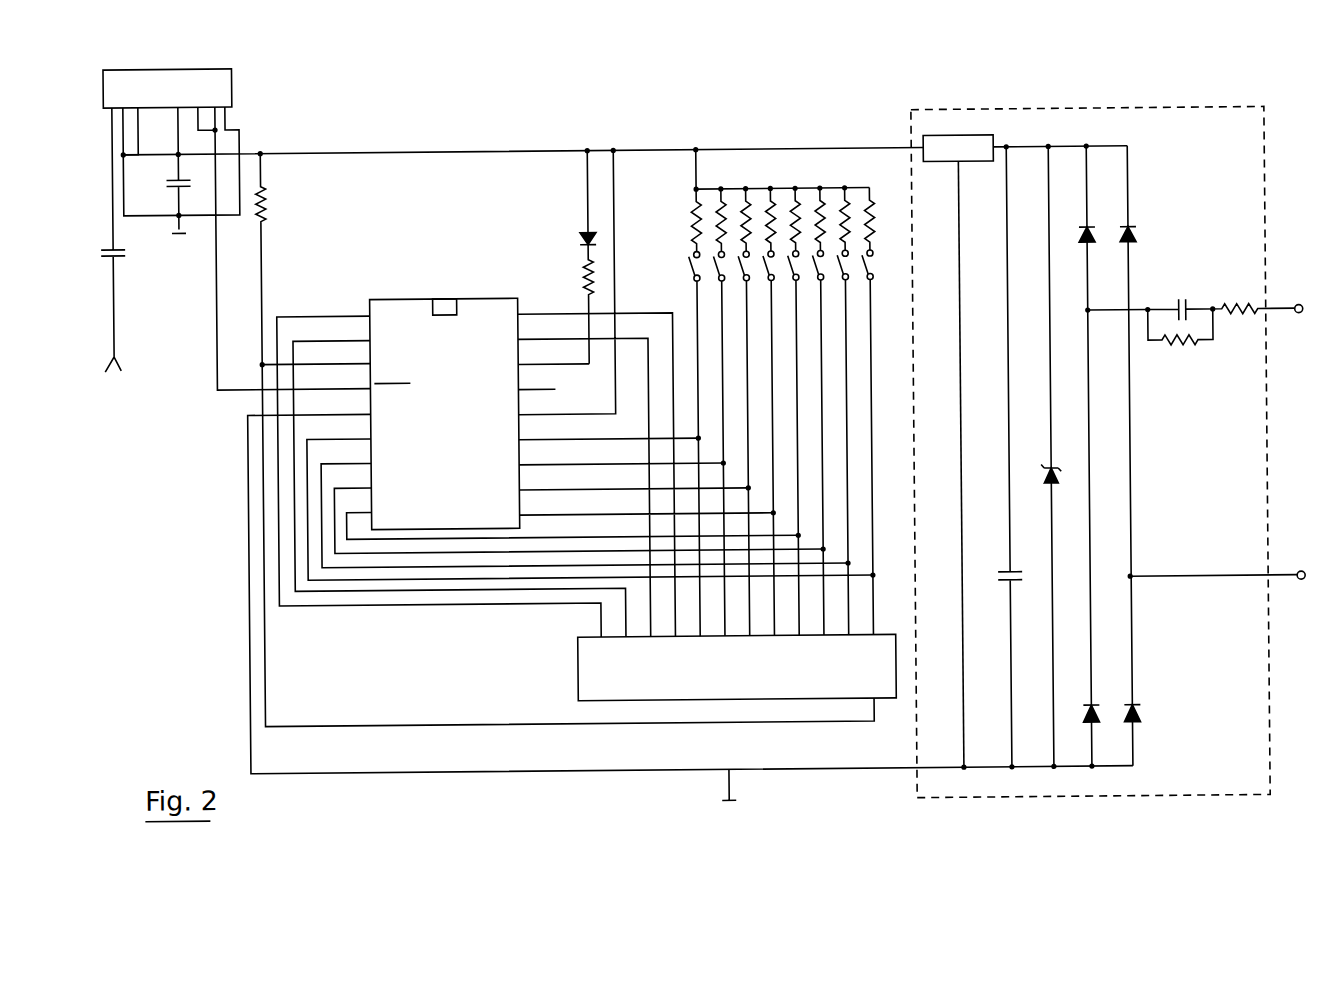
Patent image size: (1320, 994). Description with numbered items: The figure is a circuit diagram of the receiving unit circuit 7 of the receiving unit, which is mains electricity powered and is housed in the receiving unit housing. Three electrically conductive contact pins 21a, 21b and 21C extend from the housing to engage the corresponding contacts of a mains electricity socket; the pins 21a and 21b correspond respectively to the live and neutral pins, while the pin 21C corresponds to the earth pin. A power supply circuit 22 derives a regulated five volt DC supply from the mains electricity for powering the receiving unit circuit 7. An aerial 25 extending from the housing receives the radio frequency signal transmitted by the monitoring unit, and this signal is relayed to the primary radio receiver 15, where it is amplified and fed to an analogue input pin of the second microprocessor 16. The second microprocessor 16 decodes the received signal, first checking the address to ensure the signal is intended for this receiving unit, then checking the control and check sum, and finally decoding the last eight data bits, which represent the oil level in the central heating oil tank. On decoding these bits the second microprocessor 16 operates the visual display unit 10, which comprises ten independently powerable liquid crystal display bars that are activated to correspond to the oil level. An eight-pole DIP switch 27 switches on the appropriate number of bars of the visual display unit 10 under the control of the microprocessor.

The receiving unit circuit 7 is at (229, 599).
The visual display unit 10 is at (576, 689).
The primary radio receiver 15 is at (236, 87).
The second microprocessor 16 is at (460, 297).
The contact pin 21a is at (1299, 310).
The contact pin 21b is at (1300, 577).
The contact pin 21C is at (730, 803).
The power supply circuit 22 is at (1028, 113).
The aerial 25 is at (122, 362).
The eight-pole DIP switch 27 is at (669, 259).